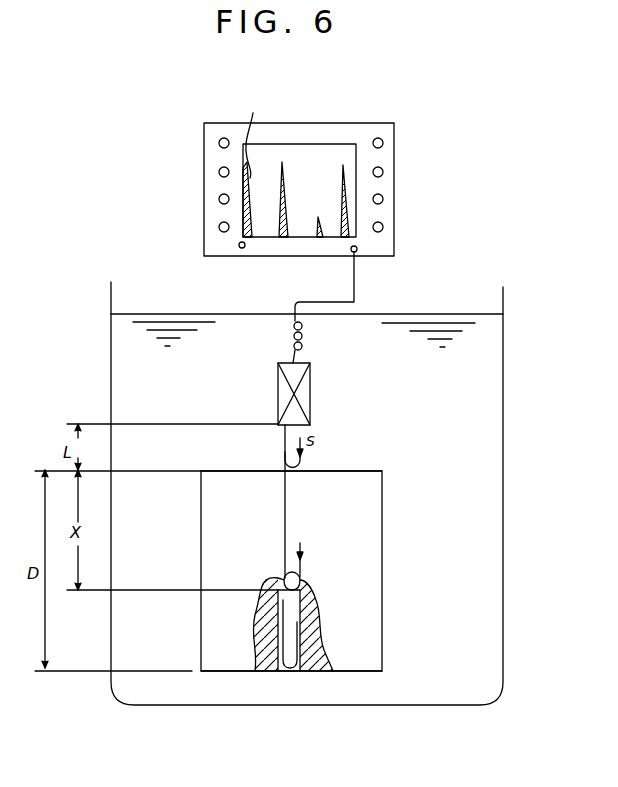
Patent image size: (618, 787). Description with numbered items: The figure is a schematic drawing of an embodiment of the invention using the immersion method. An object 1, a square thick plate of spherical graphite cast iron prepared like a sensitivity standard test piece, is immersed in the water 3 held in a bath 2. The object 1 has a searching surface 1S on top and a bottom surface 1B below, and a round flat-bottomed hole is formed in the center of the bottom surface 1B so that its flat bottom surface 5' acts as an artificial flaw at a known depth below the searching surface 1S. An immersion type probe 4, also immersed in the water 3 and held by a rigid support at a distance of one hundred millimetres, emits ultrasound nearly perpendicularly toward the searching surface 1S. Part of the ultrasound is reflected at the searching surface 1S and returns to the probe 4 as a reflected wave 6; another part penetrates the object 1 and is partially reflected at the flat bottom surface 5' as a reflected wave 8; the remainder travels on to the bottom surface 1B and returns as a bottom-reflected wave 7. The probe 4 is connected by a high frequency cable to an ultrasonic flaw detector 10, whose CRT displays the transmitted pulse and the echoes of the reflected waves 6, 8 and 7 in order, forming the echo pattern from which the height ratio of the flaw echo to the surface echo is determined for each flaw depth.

The object 1 is at (375, 623).
The searching surface 1S is at (302, 460).
The bottom surface 1B is at (357, 672).
The bath 2 is at (503, 401).
The water 3 is at (482, 330).
The immersion type probe 4 is at (278, 365).
The flat bottom surface 5' is at (415, 567).
The reflected wave 6 is at (380, 428).
The bottom-reflected wave 7 is at (292, 672).
The reflected wave 8 is at (302, 563).
The ultrasonic flaw detector 10 is at (387, 216).